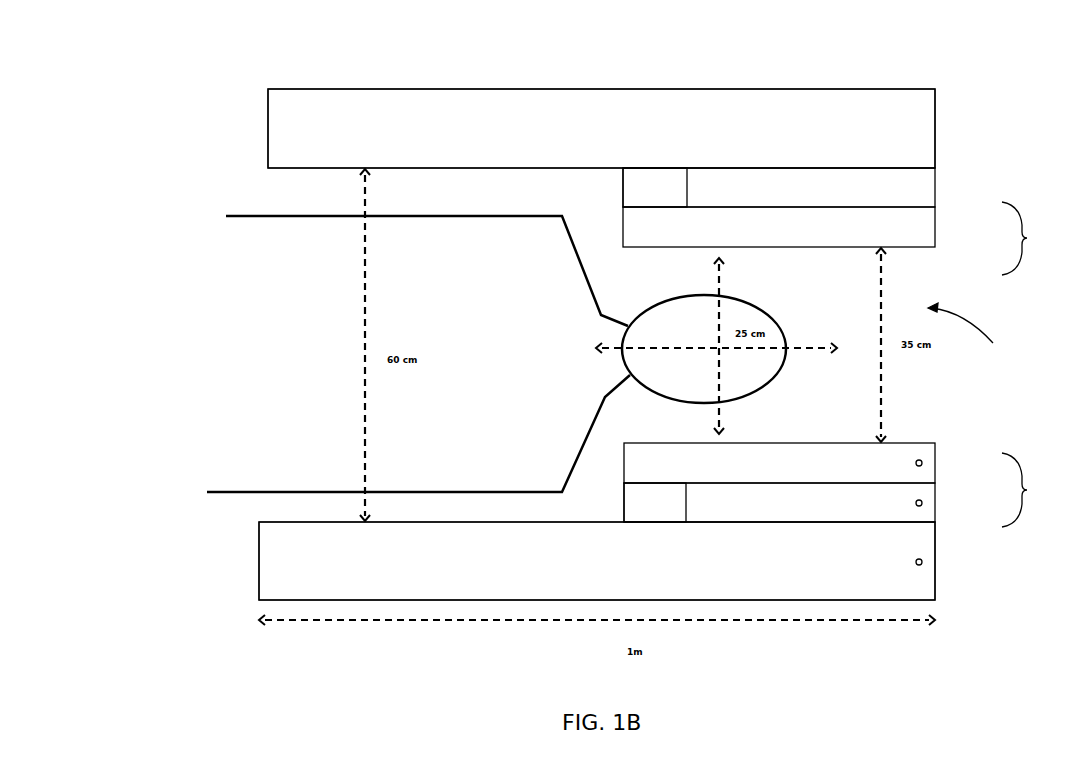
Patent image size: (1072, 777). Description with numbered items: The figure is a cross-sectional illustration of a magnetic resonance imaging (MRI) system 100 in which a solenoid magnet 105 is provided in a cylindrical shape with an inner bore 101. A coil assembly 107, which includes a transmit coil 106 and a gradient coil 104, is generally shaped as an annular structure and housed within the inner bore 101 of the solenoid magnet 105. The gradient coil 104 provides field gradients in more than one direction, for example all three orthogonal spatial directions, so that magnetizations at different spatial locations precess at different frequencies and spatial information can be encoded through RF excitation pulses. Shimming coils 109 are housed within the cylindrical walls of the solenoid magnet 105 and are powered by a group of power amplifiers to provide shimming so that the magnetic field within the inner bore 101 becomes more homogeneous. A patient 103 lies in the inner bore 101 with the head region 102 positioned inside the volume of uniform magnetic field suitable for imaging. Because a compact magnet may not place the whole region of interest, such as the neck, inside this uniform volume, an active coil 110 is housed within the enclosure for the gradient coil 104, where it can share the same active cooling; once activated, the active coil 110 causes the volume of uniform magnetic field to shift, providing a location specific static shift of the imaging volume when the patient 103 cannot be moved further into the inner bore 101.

The magnetic resonance imaging (MRI) system 100 is at (985, 87).
The inner bore 101 is at (978, 335).
The head region 102 is at (745, 368).
The patient 103 is at (298, 399).
The gradient coil 104 is at (935, 182).
The solenoid magnet 105 is at (935, 118).
The transmit coil 106 is at (933, 247).
The coil assembly 107 is at (1035, 364).
The shimming coils 109 is at (388, 130).
The active coil 110 is at (655, 345).